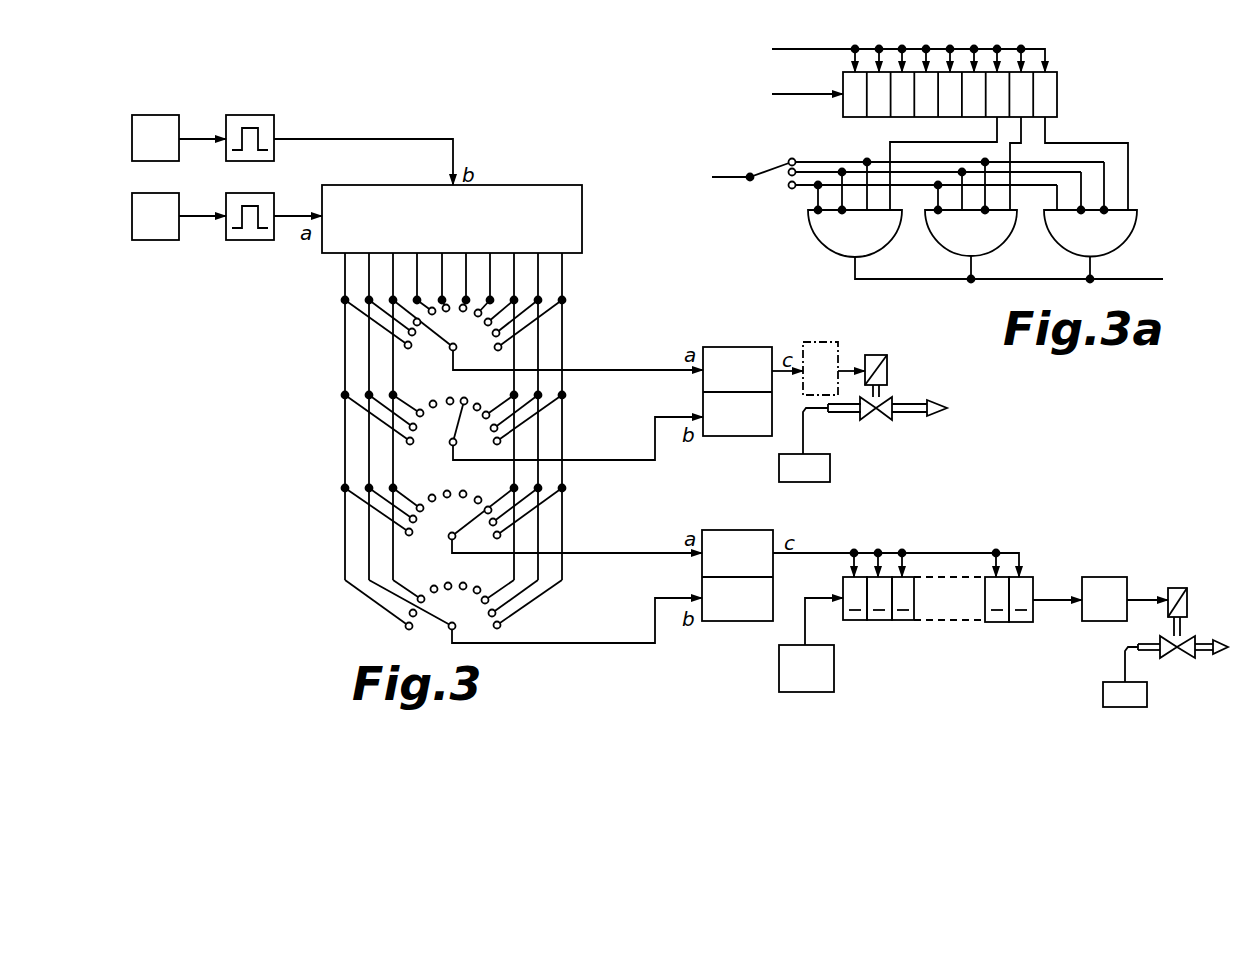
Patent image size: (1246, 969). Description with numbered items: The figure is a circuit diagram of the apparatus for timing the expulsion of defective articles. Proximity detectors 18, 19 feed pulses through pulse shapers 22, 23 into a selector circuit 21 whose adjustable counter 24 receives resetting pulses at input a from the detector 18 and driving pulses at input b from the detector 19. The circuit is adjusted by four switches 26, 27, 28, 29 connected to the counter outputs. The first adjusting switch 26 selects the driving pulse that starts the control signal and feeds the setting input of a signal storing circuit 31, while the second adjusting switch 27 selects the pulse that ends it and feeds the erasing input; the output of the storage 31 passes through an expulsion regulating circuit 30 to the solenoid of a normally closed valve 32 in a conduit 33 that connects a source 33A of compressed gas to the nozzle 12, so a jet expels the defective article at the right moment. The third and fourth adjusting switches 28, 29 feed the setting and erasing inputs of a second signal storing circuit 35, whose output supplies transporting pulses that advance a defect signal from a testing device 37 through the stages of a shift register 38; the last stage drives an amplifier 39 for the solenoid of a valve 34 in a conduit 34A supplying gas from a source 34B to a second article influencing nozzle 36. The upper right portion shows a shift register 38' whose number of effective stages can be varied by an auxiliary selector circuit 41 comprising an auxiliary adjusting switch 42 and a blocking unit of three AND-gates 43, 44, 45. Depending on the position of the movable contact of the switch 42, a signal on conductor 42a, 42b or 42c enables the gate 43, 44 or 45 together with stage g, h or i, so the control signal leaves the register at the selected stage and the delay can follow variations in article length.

In FIG. 3, the nozzle 12 is at (940, 413).
In FIG. 3, the proximity detector 18 is at (167, 229).
In FIG. 3, the proximity detector 19 is at (167, 151).
In FIG. 3, the selector circuit 21 is at (310, 476).
In FIG. 3, the pulse shaper 22 is at (262, 194).
In FIG. 3, the pulse shaper 23 is at (262, 116).
In FIG. 3, the adjustable counter 24 is at (440, 230).
In FIG. 3, the first adjusting switch 26 is at (417, 370).
In FIG. 3, the second adjusting switch 27 is at (412, 474).
In FIG. 3, the third adjusting switch 28 is at (414, 552).
In FIG. 3, the fourth adjusting switch 29 is at (414, 654).
In FIG. 3, the expulsion regulating circuit 30 is at (836, 342).
In FIG. 3, the signal storing circuit 31 is at (728, 347).
In FIG. 3, the solenoid operated valve 32 is at (896, 383).
In FIG. 3, the conduit 33 is at (842, 413).
In FIG. 3, the source of compressed gaseous fluid 33A is at (825, 468).
In FIG. 3, the valve 34 is at (1154, 620).
In FIG. 3, the conduit 34A is at (1145, 652).
In FIG. 3, the source of compressed fluid 34B is at (1103, 696).
In FIG. 3, the second signal storing circuit 35 is at (724, 530).
In FIG. 3, the second article influencing nozzle 36 is at (1208, 652).
In FIG. 3, the testing device 37 is at (793, 680).
In FIG. 3, the shift register 38 is at (938, 632).
In FIG. 3A, the shift register 38' is at (964, 82).
In FIG. 3, the amplifier 39 is at (1091, 610).
In FIG. 3A, the auxiliary selector circuit 41 is at (1137, 192).
In FIG. 3A, the auxiliary adjusting switch 42 is at (768, 180).
In FIG. 3A, the conductor 42a is at (810, 160).
In FIG. 3A, the conductor 42b is at (795, 170).
In FIG. 3A, the conductor 42c is at (796, 188).
In FIG. 3A, the AND-gate 43 is at (843, 247).
In FIG. 3A, the AND-gate 44 is at (959, 247).
In FIG. 3A, the AND-gate 45 is at (1078, 247).